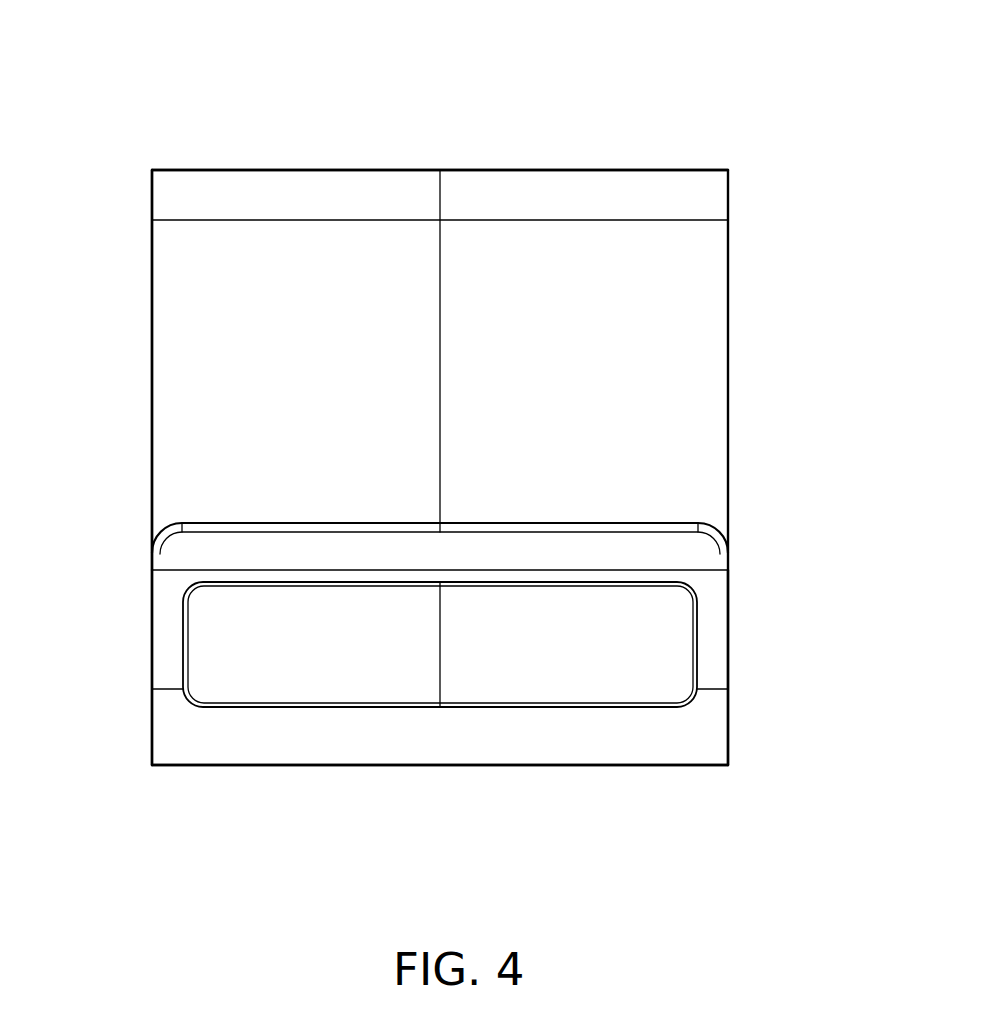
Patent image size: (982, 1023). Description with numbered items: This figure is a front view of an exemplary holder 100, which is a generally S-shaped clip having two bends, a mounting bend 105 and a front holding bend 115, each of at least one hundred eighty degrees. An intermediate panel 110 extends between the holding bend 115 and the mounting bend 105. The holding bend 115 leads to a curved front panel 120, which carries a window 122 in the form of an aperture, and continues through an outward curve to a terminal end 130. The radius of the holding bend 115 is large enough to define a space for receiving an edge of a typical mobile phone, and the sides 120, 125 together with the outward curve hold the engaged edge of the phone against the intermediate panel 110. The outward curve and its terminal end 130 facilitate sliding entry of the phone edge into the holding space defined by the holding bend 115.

The holder 100 is at (445, 157).
The mounting bend 105 is at (657, 185).
The intermediate panel 110 is at (173, 343).
The holding bend 115 is at (445, 757).
The curved front panel 120 is at (163, 643).
The window 122 is at (657, 622).
The side 125 is at (718, 672).
The terminal end 130 is at (560, 528).